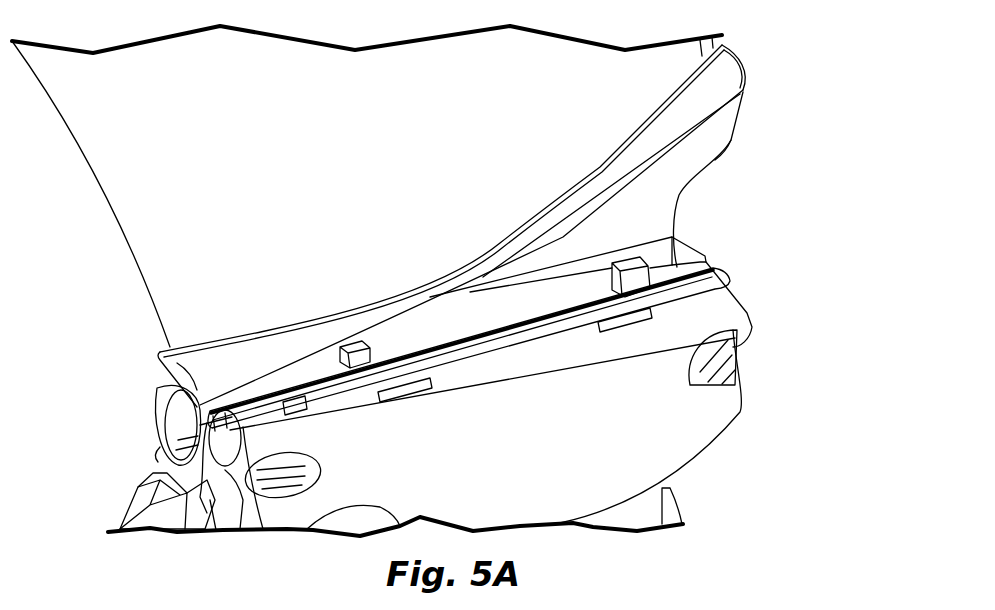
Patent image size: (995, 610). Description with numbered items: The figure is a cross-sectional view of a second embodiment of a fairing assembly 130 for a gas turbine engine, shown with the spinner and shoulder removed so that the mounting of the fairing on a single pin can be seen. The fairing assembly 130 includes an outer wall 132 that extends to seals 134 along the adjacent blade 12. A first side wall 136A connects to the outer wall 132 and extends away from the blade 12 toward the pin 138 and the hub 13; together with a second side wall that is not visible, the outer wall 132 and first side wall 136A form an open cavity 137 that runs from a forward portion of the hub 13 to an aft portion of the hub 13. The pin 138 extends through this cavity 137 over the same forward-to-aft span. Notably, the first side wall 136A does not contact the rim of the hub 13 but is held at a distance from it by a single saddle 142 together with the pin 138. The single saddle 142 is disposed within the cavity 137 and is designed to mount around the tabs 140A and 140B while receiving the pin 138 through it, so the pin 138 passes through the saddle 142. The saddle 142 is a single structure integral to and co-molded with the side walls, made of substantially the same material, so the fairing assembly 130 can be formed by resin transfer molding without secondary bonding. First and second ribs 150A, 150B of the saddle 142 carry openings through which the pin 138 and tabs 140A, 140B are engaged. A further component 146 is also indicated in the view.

The blade 12 is at (165, 220).
The hub 13 is at (673, 437).
The fairing assembly 130 is at (527, 193).
The outer wall 132 is at (722, 68).
The seals 134 is at (722, 45).
The first side wall 136A is at (680, 170).
The cavity 137 is at (725, 140).
The pin 138 is at (518, 335).
The tab 140A is at (365, 392).
The tab 140B is at (648, 318).
The single saddle 142 is at (656, 260).
The retainer 146 is at (295, 403).
The first rib 150A is at (401, 392).
The second rib 150B is at (617, 334).